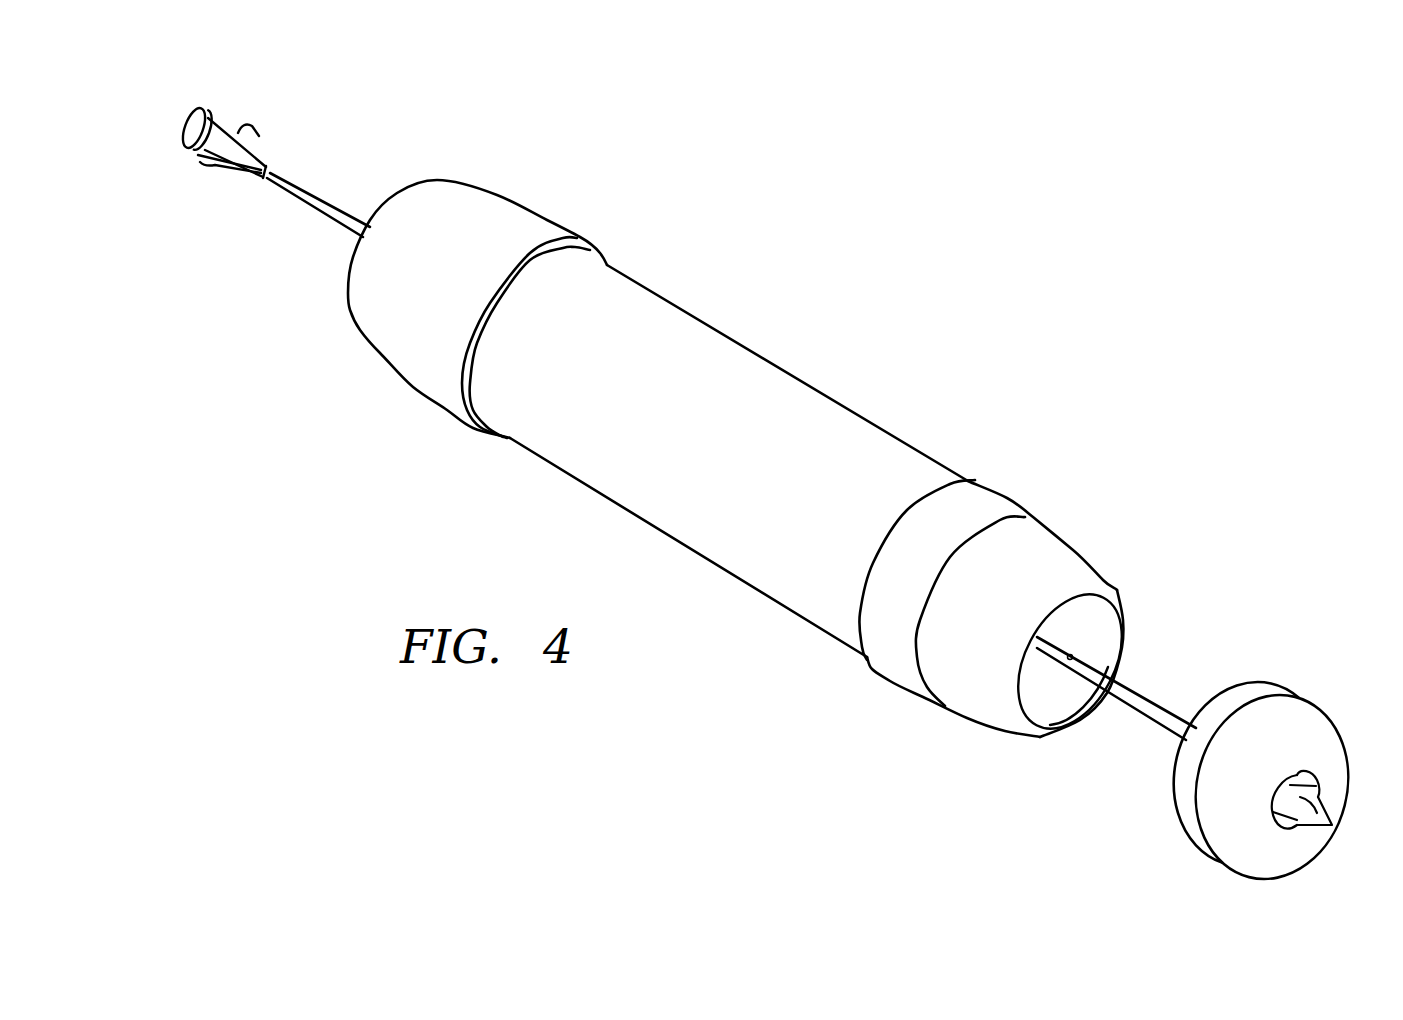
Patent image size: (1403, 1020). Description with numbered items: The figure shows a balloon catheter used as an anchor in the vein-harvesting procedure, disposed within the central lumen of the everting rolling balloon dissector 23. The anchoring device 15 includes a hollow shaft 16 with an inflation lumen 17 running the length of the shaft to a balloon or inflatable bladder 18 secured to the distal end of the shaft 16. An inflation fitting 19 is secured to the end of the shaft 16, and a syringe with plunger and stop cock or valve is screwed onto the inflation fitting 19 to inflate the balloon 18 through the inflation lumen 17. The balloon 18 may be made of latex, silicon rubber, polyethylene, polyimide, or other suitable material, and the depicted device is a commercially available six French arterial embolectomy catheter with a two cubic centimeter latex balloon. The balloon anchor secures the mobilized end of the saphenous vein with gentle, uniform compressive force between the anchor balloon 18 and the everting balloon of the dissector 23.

The anchoring device 15 is at (1153, 818).
The hollow shaft 16 is at (305, 205).
The inflation lumen 17 is at (1070, 657).
The balloon 18 is at (1313, 732).
The inflation fitting 19 is at (217, 112).
The everting rolling balloon dissector 23 is at (548, 472).